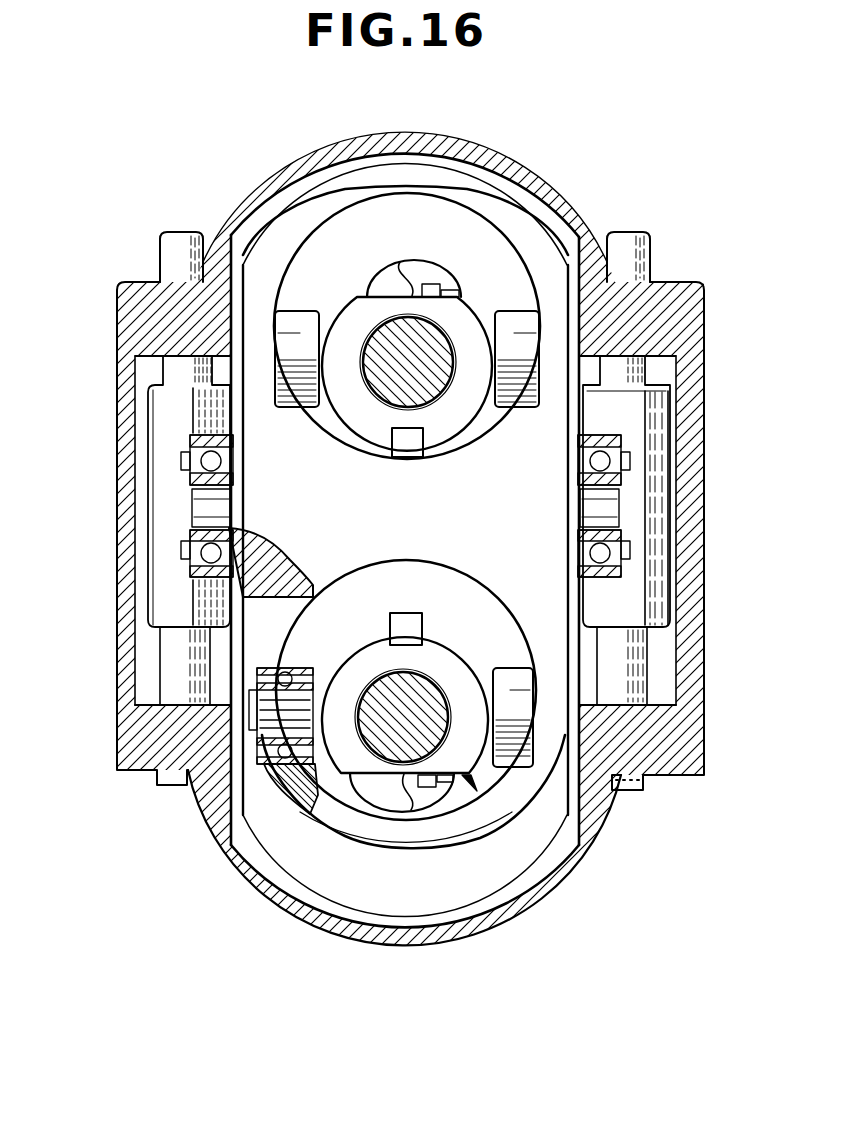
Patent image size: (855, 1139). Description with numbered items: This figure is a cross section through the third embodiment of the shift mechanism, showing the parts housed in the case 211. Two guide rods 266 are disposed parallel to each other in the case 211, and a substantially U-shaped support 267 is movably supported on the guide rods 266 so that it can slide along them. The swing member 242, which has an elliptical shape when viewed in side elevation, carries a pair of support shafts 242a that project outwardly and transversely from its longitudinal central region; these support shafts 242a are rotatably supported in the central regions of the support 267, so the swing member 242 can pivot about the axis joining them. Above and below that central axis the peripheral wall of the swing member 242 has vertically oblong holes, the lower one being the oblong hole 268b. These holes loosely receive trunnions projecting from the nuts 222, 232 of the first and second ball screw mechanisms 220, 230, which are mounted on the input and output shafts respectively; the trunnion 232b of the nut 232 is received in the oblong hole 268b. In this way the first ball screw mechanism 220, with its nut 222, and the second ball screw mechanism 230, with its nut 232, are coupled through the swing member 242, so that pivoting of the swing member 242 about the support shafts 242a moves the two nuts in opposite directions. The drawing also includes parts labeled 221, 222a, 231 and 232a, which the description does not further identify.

The case 211 is at (676, 756).
The first ball screw mechanism 220 is at (383, 313).
The first rotor shaft 221 is at (428, 380).
The nut 222 is at (367, 418).
The first rotor seal 222a is at (413, 252).
The second ball screw mechanism 230 is at (377, 767).
The second rotor shaft 231 is at (424, 690).
The nut 232 is at (356, 668).
The second rotor seal 232a is at (413, 812).
The trunnion 232b is at (224, 826).
The swing member 242 is at (515, 222).
The support shafts 242a is at (200, 513).
The guide rods 266 is at (172, 256).
The support 267 is at (600, 503).
The oblong hole 268b is at (292, 792).